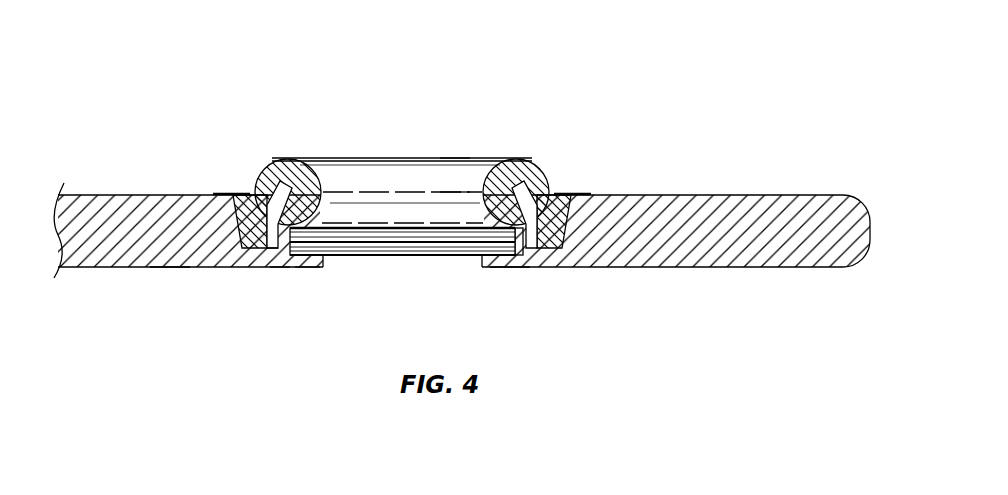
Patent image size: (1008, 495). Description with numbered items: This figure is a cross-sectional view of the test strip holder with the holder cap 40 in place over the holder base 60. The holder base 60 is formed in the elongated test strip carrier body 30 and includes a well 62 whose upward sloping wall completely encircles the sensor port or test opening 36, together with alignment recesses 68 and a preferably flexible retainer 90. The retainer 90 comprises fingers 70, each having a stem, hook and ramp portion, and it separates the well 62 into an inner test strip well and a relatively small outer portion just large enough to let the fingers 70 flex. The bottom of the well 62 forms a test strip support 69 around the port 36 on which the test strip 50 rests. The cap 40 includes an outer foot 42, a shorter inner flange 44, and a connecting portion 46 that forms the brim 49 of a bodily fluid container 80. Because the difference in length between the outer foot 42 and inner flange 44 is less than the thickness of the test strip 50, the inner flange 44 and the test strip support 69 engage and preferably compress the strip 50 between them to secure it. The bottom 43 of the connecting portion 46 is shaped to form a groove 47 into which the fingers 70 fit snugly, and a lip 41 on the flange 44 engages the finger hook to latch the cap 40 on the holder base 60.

The test strip carrier body 30 is at (750, 202).
The sensor port 36 is at (465, 262).
The holder cap 40 is at (355, 158).
The lip 41 is at (525, 215).
The outer foot 42 is at (228, 250).
The bottom of connecting portion 43 is at (307, 172).
The inner flange 44 is at (315, 222).
The connecting portion 46 is at (278, 159).
The groove 47 is at (279, 285).
The brim 49 is at (453, 162).
The test strip 50 is at (428, 270).
The holder base 60 is at (515, 288).
The well 62 is at (585, 232).
The alignment recesses 68 is at (168, 266).
The test strip support 69 is at (303, 270).
The fingers 70 is at (275, 242).
The bodily fluid container 80 is at (466, 183).
The retainer 90 is at (545, 172).